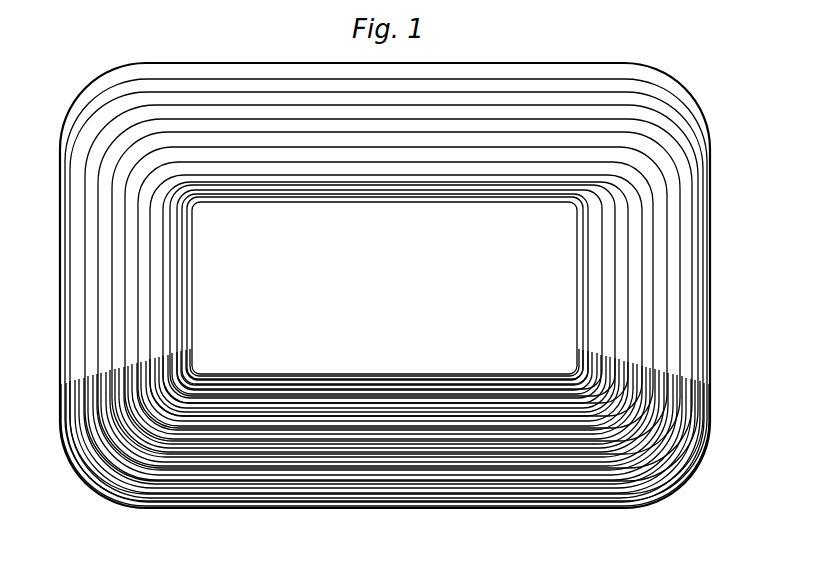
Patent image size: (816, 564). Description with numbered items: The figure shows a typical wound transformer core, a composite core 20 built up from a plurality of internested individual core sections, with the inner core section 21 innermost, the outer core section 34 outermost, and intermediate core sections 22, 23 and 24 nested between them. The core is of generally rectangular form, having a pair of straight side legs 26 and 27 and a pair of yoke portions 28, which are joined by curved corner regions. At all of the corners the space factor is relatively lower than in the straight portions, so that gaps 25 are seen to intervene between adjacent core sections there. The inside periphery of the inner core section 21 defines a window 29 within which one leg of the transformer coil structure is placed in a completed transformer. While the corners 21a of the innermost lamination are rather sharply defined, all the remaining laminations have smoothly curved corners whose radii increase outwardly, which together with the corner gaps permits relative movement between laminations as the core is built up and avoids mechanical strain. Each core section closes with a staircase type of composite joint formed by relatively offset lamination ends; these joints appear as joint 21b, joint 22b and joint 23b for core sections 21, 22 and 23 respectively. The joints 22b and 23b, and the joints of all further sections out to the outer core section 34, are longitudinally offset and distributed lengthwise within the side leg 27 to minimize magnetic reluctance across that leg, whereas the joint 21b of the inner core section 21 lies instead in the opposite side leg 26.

The composite core 20 is at (750, 142).
The inner core section 21 is at (523, 194).
The corners of innermost lamination 21a is at (196, 203).
The joint of inner core section 21b is at (417, 196).
The intermediate core section 22 is at (457, 396).
The joint of core section 22 22b is at (313, 393).
The intermediate core section 23 is at (497, 412).
The joint of core section 23 23b is at (369, 412).
The intermediate core section 24 is at (530, 420).
The gaps 25 is at (636, 135).
The side leg 26 is at (277, 63).
The side leg 27 is at (327, 508).
The yoke portions 28 is at (61, 267).
The window 29 is at (384, 288).
The outer core section 34 is at (388, 502).